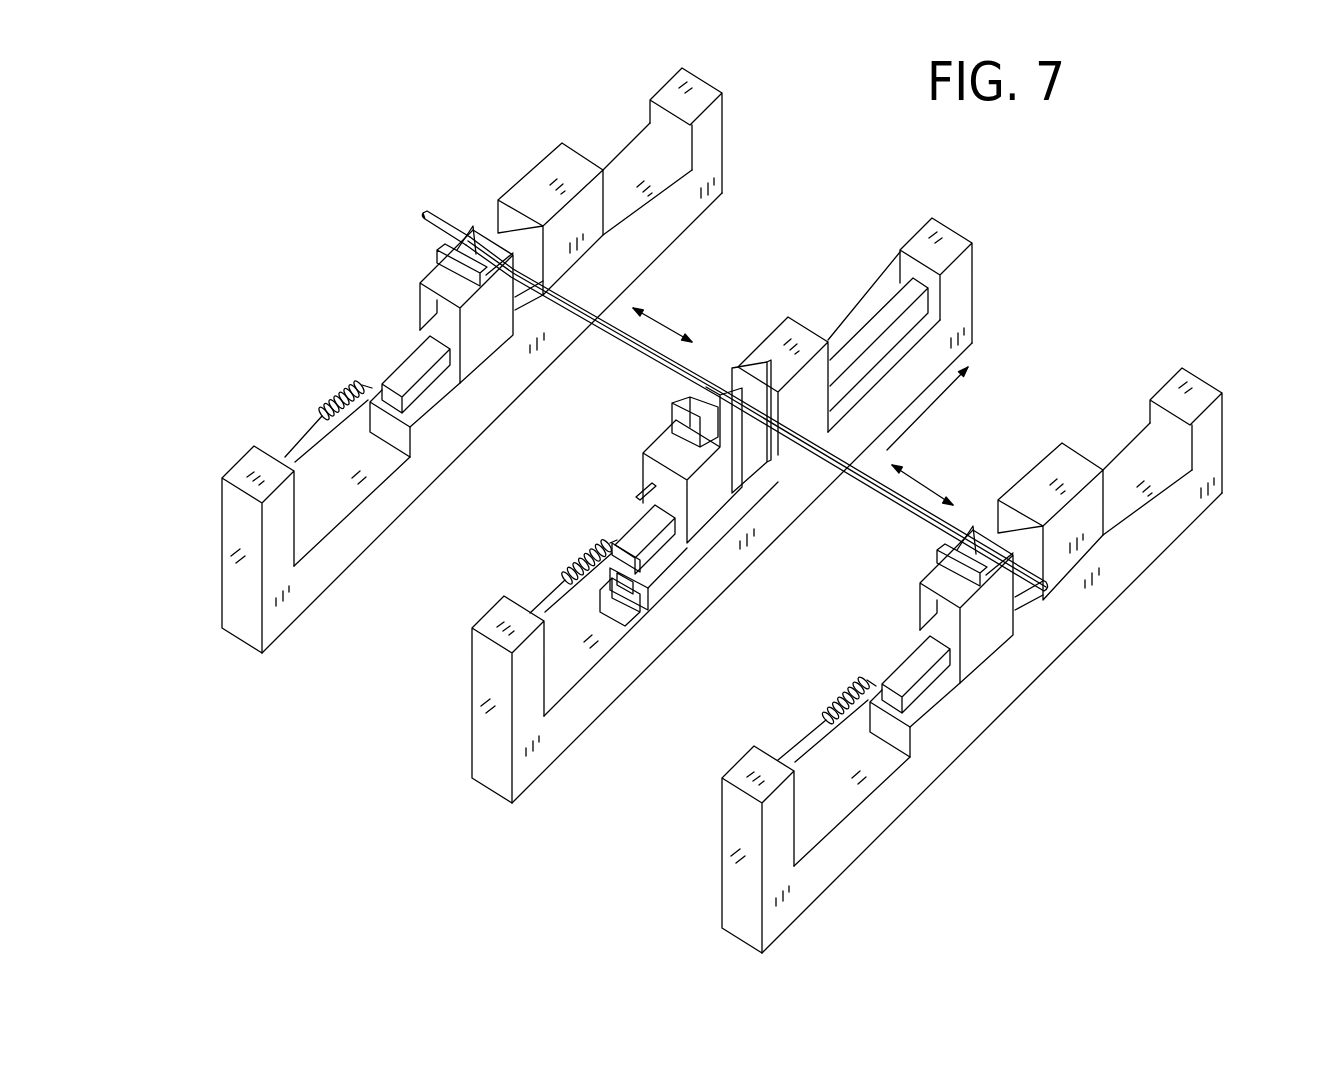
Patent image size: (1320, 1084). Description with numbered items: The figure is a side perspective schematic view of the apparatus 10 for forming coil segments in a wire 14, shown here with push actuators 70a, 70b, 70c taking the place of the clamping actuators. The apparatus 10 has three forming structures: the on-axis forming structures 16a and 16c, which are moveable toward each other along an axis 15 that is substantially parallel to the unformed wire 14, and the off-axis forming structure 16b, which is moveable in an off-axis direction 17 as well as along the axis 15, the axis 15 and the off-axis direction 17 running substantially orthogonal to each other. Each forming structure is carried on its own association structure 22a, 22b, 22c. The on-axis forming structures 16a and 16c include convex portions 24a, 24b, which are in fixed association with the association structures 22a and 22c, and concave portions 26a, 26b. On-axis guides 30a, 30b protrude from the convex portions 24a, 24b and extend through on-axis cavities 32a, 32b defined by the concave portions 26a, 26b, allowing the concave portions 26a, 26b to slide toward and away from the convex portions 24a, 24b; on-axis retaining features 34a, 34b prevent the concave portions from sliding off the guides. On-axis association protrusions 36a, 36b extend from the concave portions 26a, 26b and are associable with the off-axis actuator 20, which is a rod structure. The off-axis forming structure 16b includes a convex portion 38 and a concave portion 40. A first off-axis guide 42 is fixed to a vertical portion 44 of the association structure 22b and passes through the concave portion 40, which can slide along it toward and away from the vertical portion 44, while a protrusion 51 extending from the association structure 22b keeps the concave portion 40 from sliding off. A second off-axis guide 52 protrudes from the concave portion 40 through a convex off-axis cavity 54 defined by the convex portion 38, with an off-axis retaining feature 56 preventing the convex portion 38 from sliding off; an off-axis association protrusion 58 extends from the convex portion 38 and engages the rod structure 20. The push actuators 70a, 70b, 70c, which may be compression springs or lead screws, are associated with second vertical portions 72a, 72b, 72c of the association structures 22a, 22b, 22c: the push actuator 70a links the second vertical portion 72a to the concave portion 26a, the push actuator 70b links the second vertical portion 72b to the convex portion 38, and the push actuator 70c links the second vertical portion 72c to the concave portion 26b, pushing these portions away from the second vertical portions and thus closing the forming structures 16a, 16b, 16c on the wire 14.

The apparatus 10 is at (1195, 277).
The wire 14 is at (432, 213).
The axis 15 is at (660, 320).
The on-axis forming structure 16a is at (494, 248).
The off-axis forming structure 16b is at (730, 368).
The on-axis forming structure 16c is at (998, 545).
The off-axis direction 17 is at (932, 410).
The off-axis actuator 20 is at (708, 405).
The association structure 22a is at (380, 514).
The association structure 22b is at (540, 738).
The association structure 22c is at (812, 870).
The convex portion 24a is at (568, 160).
The convex portion 24b is at (1066, 458).
The concave portion 26a is at (437, 278).
The concave portion 26b is at (952, 592).
The on-axis guide 30a is at (410, 365).
The on-axis guide 30b is at (893, 677).
The on-axis cavity 32a is at (428, 316).
The on-axis cavity 32b is at (910, 633).
The on-axis retaining feature 34a is at (388, 400).
The on-axis retaining feature 34b is at (858, 698).
The on-axis association protrusion 36a is at (453, 243).
The on-axis association protrusion 36b is at (935, 548).
The convex portion 38 is at (668, 447).
The concave portion 40 is at (787, 330).
The first off-axis guide 42 is at (865, 337).
The vertical portion 44 is at (958, 280).
The protrusion 51 is at (642, 602).
The second off-axis guide 52 is at (640, 527).
The convex off-axis cavity 54 is at (640, 497).
The off-axis retaining feature 56 is at (615, 540).
The off-axis association protrusion 58 is at (687, 412).
The push actuator 70a is at (326, 392).
The push actuator 70b is at (573, 578).
The push actuator 70c is at (822, 720).
The second vertical portion 72a is at (240, 520).
The second vertical portion 72b is at (470, 663).
The second vertical portion 72c is at (740, 830).